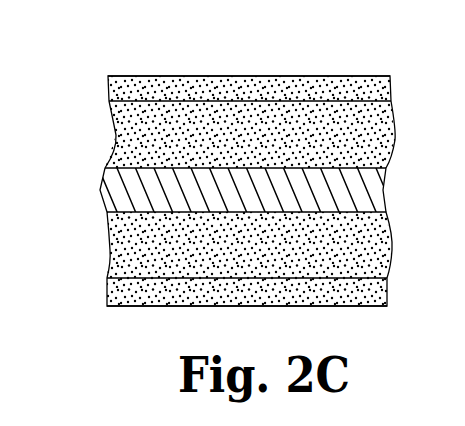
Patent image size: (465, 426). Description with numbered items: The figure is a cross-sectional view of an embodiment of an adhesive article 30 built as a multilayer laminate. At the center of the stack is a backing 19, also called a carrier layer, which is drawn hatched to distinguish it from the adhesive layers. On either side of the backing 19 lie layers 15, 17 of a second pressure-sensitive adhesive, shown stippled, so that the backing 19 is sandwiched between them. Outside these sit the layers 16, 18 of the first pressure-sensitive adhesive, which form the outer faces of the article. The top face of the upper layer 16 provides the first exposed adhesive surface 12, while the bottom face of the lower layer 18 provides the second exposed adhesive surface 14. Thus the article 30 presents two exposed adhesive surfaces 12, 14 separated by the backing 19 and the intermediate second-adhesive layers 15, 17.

The first exposed adhesive surface 12 is at (200, 75).
The second exposed adhesive surface 14 is at (140, 305).
The layer of second pressure-sensitive adhesive 15 is at (108, 117).
The first layer of pressure-sensitive adhesive 16 is at (372, 88).
The layer of second pressure-sensitive adhesive 17 is at (118, 245).
The second layer of pressure-sensitive adhesive 18 is at (360, 290).
The backing 19 is at (370, 200).
The adhesive article 30 is at (86, 180).